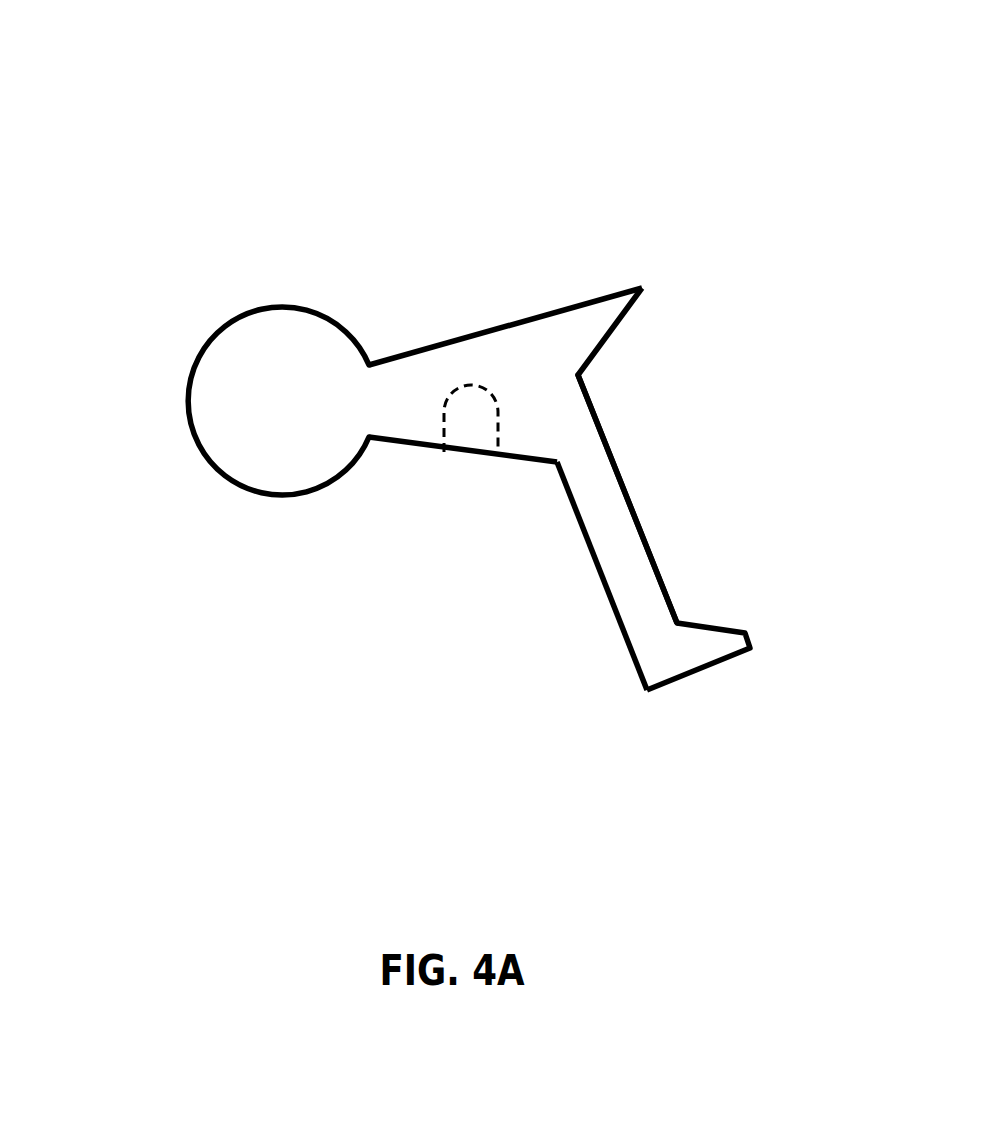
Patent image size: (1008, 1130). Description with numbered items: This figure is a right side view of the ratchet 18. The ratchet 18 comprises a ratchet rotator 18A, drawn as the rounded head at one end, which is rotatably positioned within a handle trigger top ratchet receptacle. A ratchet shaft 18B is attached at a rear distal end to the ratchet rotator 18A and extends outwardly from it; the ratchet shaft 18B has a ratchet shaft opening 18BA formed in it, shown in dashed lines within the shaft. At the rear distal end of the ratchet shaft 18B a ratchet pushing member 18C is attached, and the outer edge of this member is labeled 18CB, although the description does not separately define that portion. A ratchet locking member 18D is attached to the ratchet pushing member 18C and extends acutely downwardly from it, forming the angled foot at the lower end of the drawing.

The ratchet 18 is at (376, 37).
The ratchet rotator 18A is at (230, 338).
The ratchet shaft 18B is at (462, 338).
The ratchet shaft opening 18BA is at (467, 447).
The ratchet pushing member 18C is at (641, 287).
The outer edge of leg portion 18CB is at (637, 512).
The ratchet locking member 18D is at (745, 633).